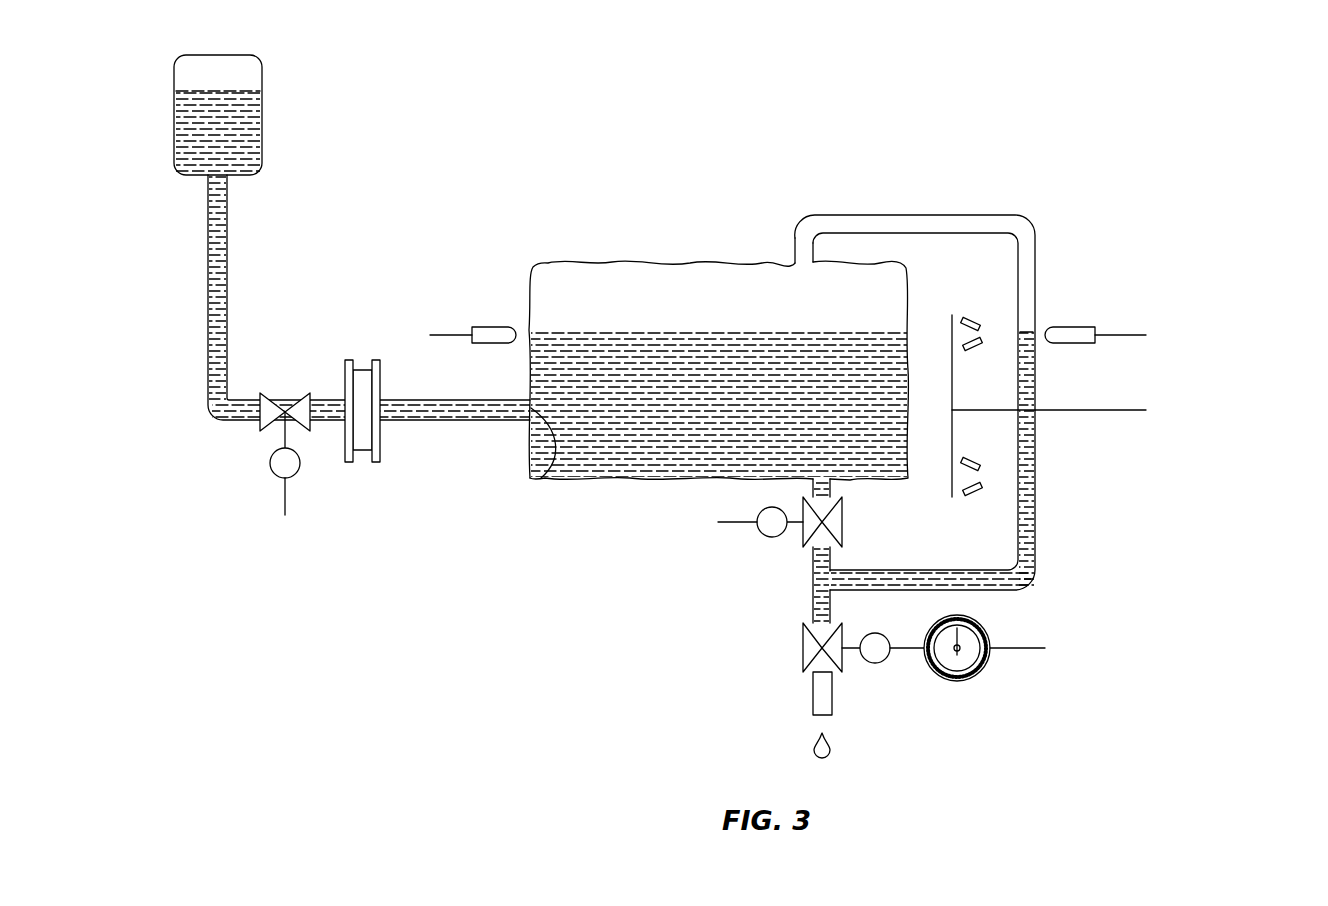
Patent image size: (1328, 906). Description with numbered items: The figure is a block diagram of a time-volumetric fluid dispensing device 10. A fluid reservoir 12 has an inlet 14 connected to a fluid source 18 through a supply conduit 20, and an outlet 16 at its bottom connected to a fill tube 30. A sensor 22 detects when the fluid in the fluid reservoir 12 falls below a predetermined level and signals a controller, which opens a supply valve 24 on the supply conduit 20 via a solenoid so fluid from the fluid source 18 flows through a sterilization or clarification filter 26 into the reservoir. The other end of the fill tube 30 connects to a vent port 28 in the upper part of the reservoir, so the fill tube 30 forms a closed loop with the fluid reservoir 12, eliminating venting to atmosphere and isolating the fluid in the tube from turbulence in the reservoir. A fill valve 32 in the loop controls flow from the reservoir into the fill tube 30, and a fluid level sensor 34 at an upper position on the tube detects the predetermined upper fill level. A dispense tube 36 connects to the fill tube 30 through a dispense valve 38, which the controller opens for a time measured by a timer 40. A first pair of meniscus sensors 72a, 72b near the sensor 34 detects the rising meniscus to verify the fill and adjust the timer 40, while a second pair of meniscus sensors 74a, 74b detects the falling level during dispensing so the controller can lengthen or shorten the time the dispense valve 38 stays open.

The fluid dispensing device 10 is at (1062, 131).
The fluid reservoir 12 is at (596, 265).
The inlet 14 is at (543, 480).
The outlet 16 is at (838, 470).
The fluid source 18 is at (262, 95).
The supply conduit 20 is at (208, 266).
The sensor 22 is at (497, 327).
The supply valve 24 is at (258, 427).
The sterilization or clarification filter 26 is at (380, 440).
The vent port 28 is at (782, 260).
The fill tube 30 is at (1036, 273).
The fill valve 32 is at (838, 543).
The fluid level sensor 34 is at (1060, 327).
The dispense tube 36 is at (832, 698).
The dispense valve 38 is at (810, 663).
The timer 40 is at (977, 625).
The upper meniscus sensor of first pair 72a is at (978, 318).
The lower meniscus sensor of first pair 72b is at (983, 341).
The upper meniscus sensor of second pair 74a is at (966, 459).
The lower meniscus sensor of second pair 74b is at (980, 490).